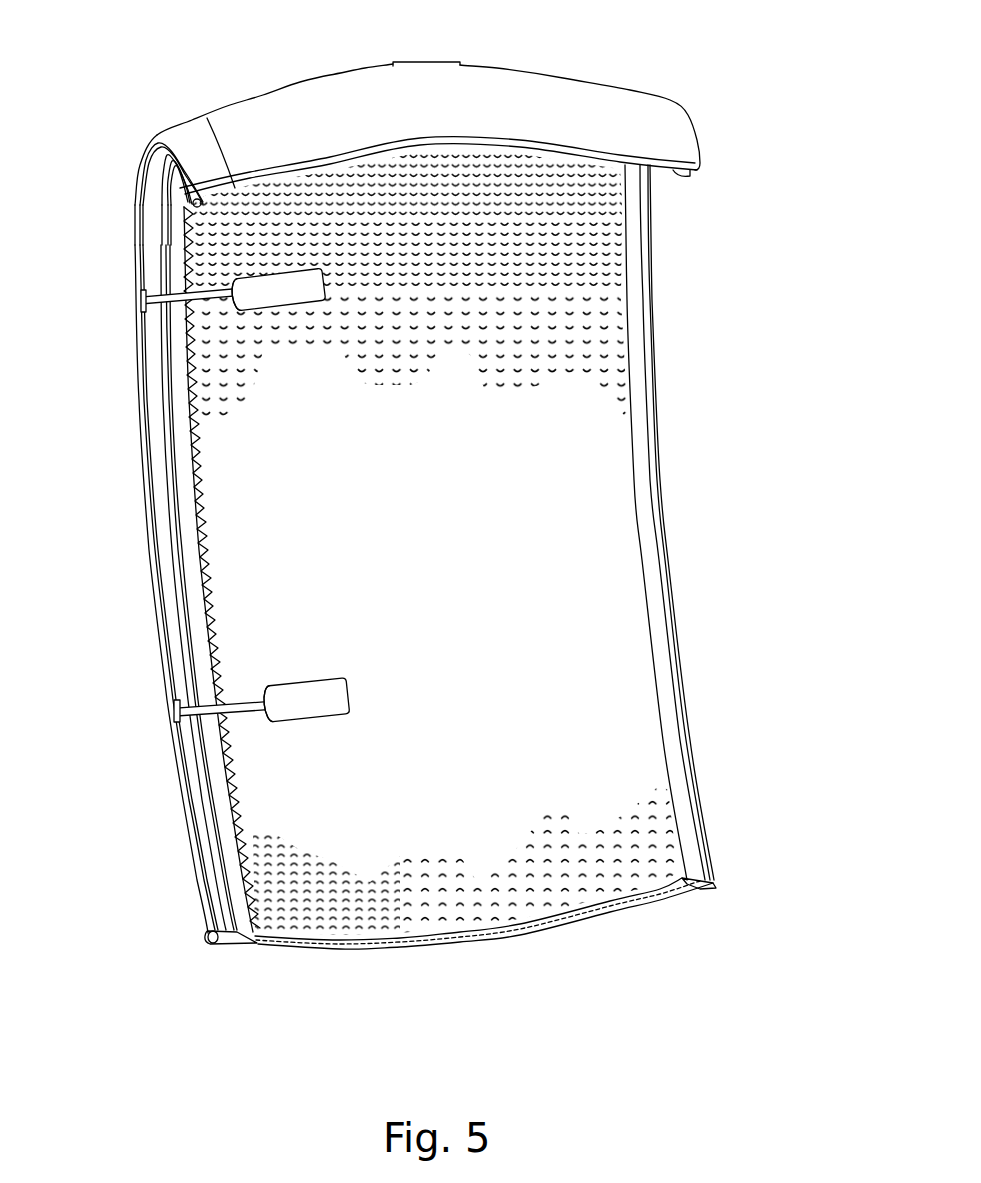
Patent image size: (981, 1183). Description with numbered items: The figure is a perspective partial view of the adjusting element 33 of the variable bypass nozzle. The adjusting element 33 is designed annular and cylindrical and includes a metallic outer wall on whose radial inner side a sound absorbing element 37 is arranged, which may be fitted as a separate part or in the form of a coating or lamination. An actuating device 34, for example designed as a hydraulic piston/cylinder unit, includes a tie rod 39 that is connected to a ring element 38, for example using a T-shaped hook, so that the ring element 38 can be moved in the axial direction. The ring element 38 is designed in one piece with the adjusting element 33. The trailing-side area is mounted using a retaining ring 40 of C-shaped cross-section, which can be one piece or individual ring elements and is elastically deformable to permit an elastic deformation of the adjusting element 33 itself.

The adjusting element 33 is at (582, 100).
The actuating device 34 is at (278, 290).
The sound absorbing element 37 is at (190, 247).
The ring element 38 is at (153, 350).
The tie rod 39 is at (245, 702).
The retaining ring 40 is at (667, 513).